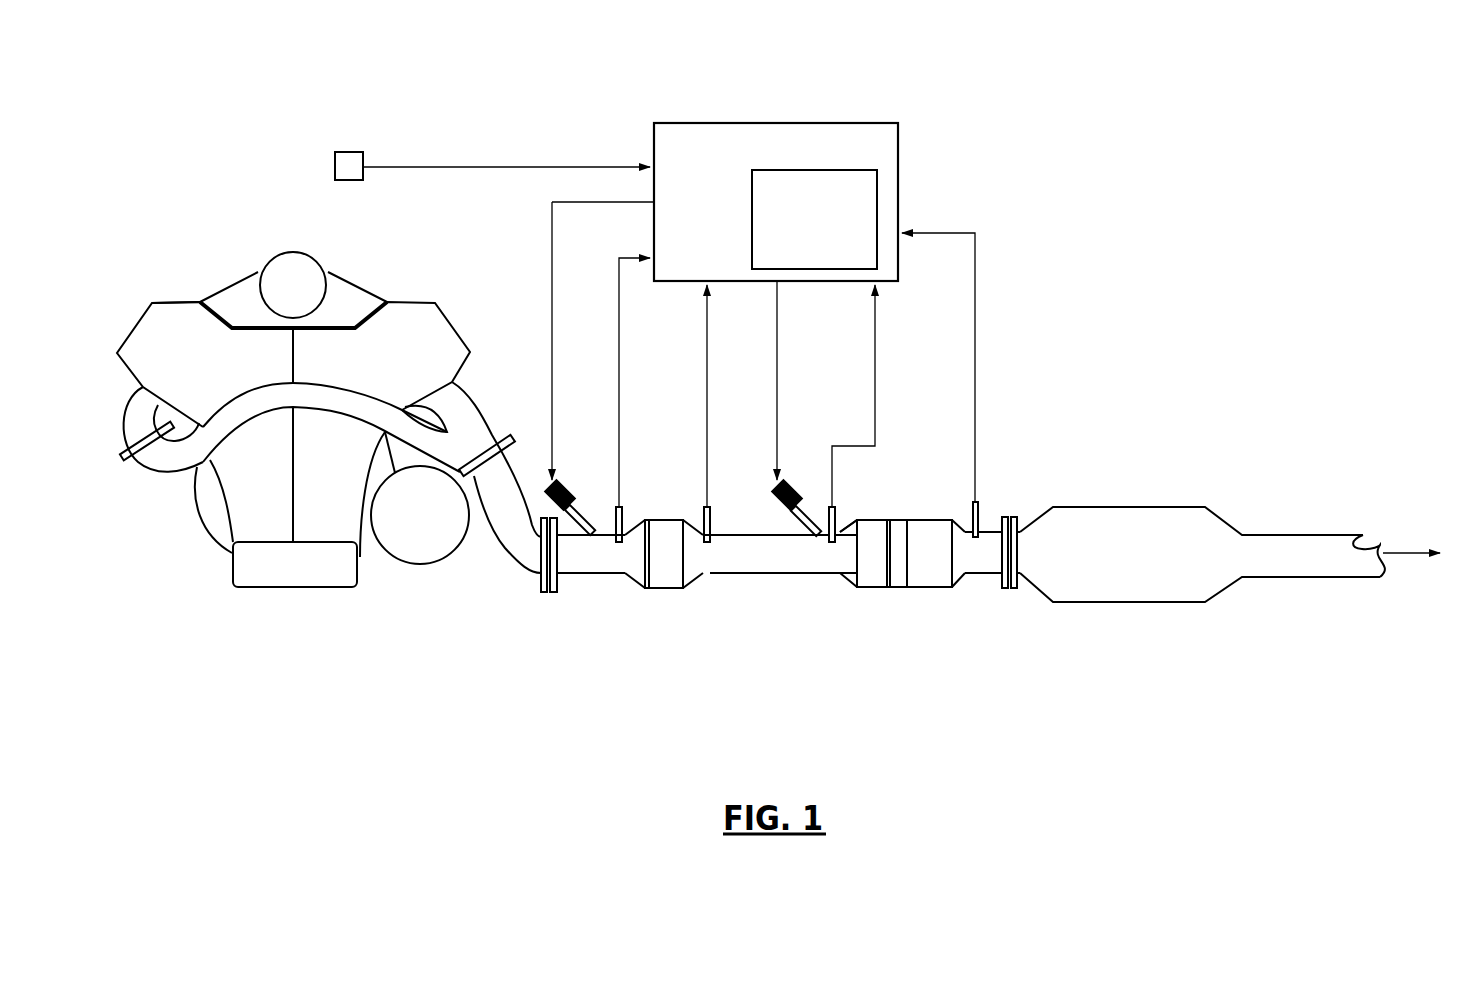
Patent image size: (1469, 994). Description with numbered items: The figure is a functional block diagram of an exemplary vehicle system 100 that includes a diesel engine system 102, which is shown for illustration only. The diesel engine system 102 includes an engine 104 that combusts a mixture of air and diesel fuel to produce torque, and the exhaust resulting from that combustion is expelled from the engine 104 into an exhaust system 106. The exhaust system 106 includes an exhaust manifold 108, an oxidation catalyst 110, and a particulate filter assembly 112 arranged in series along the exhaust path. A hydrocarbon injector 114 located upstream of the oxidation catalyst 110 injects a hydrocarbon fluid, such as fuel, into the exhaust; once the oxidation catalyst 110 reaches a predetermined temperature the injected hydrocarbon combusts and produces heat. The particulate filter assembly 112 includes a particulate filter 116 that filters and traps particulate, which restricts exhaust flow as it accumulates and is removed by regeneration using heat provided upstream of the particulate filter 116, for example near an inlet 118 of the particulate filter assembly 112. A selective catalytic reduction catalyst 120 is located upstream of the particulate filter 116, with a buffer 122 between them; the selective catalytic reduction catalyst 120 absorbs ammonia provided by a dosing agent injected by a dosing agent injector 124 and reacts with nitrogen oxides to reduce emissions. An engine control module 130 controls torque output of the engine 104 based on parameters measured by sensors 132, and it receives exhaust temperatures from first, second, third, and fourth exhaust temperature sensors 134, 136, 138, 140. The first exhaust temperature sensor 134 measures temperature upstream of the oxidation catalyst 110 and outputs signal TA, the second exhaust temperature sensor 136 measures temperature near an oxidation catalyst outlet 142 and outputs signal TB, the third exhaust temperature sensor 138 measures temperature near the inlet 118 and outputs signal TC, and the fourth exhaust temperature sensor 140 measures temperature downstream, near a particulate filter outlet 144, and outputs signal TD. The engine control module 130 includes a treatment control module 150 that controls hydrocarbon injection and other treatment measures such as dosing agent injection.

The vehicle system 100 is at (259, 122).
The diesel engine system 102 is at (406, 254).
The engine 104 is at (170, 302).
The exhaust system 106 is at (843, 735).
The exhaust manifold 108 is at (490, 380).
The oxidation catalyst 110 is at (667, 588).
The particulate filter assembly 112 is at (913, 500).
The hydrocarbon injector 114 is at (568, 482).
The particulate filter 116 is at (937, 576).
The inlet 118 is at (853, 510).
The selective catalytic reduction catalyst 120 is at (873, 576).
The buffer 122 is at (899, 576).
The dosing agent injector 124 is at (793, 476).
The engine control module 130 is at (775, 123).
The sensors 132 is at (348, 152).
The first exhaust temperature sensor 134 is at (619, 542).
The second exhaust temperature sensor 136 is at (707, 542).
The third exhaust temperature sensor 138 is at (832, 542).
The fourth exhaust temperature sensor 140 is at (977, 537).
The oxidation catalyst outlet 142 is at (718, 520).
The particulate filter outlet 144 is at (987, 515).
The treatment control module 150 is at (870, 170).